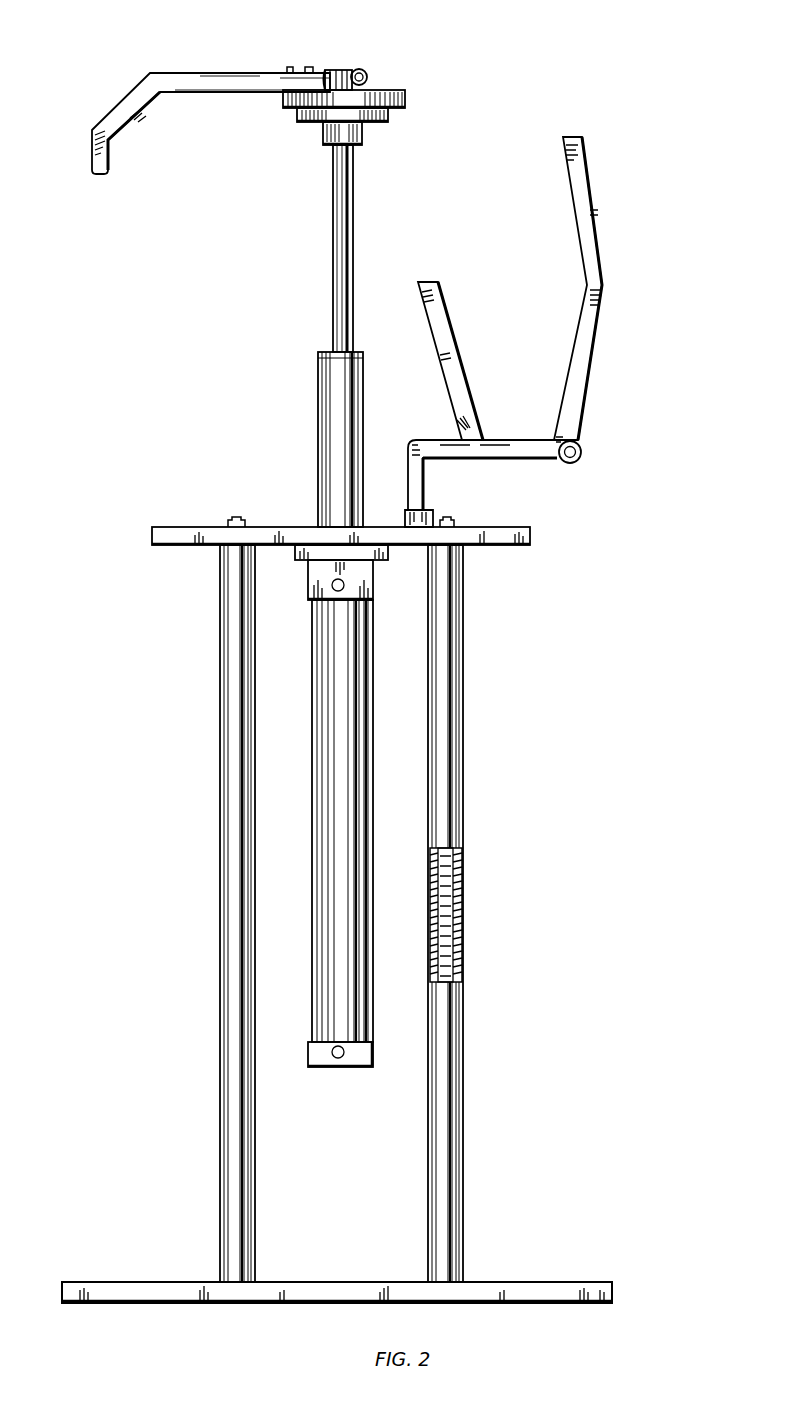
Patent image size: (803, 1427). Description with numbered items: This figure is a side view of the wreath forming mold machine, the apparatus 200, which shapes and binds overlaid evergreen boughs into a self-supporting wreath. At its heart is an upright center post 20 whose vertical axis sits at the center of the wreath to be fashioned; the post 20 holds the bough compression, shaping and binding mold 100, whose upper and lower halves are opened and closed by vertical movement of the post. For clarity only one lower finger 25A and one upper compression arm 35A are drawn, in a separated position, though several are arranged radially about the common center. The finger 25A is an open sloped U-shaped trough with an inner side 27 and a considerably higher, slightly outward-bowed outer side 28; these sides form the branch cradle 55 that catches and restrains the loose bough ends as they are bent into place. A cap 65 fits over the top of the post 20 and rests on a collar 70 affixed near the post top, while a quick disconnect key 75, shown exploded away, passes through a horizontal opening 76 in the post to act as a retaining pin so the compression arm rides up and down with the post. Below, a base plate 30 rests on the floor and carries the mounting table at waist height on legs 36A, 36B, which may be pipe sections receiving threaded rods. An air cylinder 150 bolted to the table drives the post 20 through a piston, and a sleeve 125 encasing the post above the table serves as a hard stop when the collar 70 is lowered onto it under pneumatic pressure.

The center post 20 is at (342, 228).
The finger 25A is at (578, 172).
The inner side 27 is at (440, 313).
The outer side 28 is at (562, 380).
The base plate 30 is at (572, 1283).
The compression arm 35A is at (128, 117).
The leg 36A is at (443, 780).
The leg 36B is at (234, 817).
The branch cradle 55 is at (512, 297).
The cap 65 is at (387, 93).
The collar 70 is at (305, 118).
The quick disconnect key 75 is at (367, 70).
The horizontal opening 76 is at (327, 70).
The mold 100 is at (600, 367).
The sleeve 125 is at (333, 438).
The air cylinder 150 is at (312, 960).
The apparatus 200 is at (518, 97).